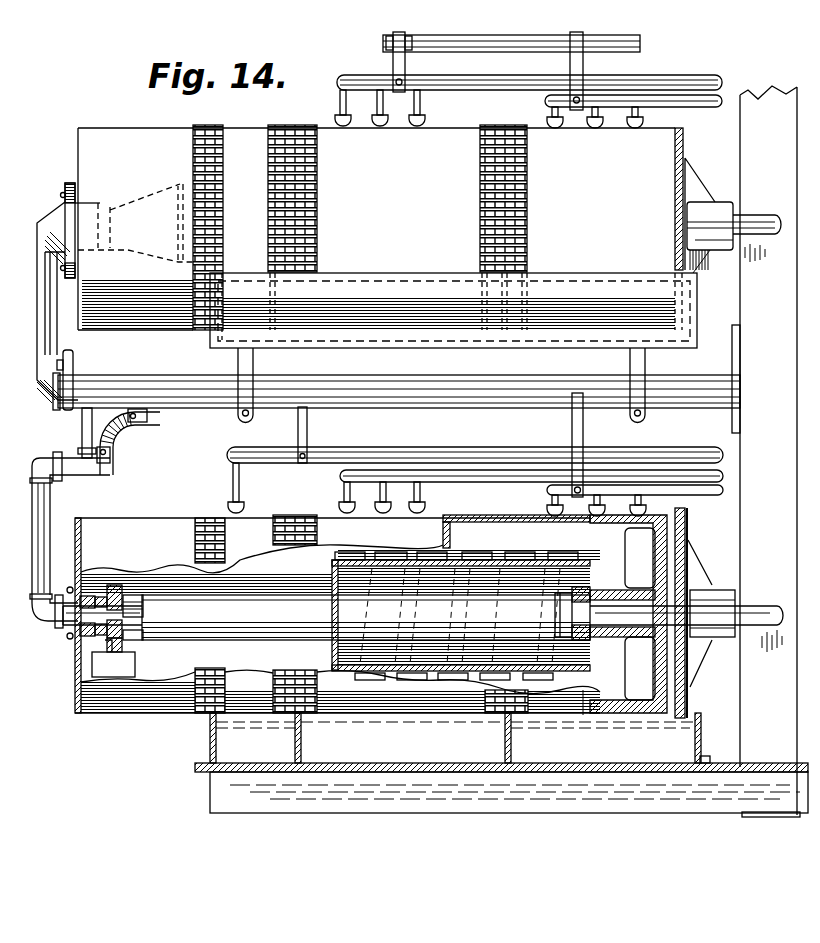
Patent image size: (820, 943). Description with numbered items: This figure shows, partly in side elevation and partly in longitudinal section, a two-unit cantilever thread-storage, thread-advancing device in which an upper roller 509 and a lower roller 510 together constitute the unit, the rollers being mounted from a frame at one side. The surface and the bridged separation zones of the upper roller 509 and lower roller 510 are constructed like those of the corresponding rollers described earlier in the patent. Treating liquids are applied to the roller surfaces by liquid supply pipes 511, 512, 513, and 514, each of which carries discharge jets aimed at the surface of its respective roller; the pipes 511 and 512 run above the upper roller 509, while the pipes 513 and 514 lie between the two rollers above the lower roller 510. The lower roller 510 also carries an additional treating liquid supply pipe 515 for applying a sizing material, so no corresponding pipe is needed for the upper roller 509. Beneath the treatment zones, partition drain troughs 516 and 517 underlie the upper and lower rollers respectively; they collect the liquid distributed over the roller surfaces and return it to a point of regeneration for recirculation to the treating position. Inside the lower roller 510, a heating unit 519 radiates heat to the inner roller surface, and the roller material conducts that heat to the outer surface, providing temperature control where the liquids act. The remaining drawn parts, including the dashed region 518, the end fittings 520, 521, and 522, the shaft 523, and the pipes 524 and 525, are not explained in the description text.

The upper roller 509 is at (532, 136).
The lower roller 510 is at (256, 710).
The liquid supply pipe 511 is at (455, 66).
The liquid supply pipe 512 is at (703, 100).
The liquid supply pipe 513 is at (340, 470).
The liquid supply pipe 514 is at (705, 488).
The treating liquid supply pipe 515 is at (368, 455).
The partition drain trough 516 is at (583, 335).
The partition drain trough 517 is at (332, 770).
The opening 518 is at (146, 215).
The heating unit 519 is at (400, 698).
The end flange 520 is at (85, 622).
The bearing gland 521 is at (95, 596).
The bearing 522 is at (578, 637).
The shaft 523 is at (183, 638).
The connecting pipe 524 is at (50, 506).
The conduit pipe 525 is at (203, 408).